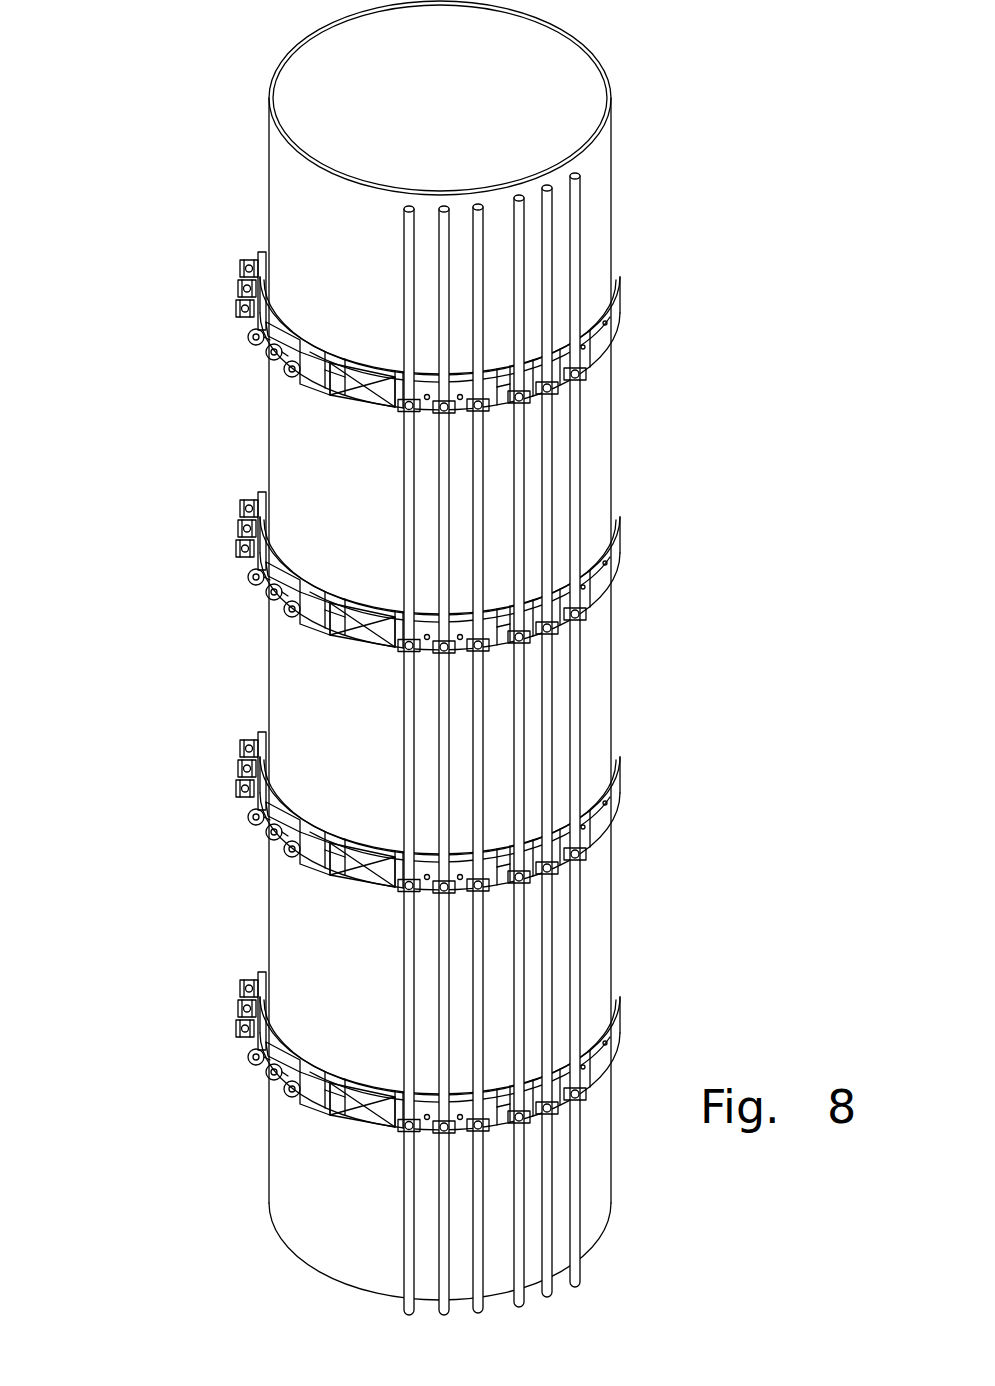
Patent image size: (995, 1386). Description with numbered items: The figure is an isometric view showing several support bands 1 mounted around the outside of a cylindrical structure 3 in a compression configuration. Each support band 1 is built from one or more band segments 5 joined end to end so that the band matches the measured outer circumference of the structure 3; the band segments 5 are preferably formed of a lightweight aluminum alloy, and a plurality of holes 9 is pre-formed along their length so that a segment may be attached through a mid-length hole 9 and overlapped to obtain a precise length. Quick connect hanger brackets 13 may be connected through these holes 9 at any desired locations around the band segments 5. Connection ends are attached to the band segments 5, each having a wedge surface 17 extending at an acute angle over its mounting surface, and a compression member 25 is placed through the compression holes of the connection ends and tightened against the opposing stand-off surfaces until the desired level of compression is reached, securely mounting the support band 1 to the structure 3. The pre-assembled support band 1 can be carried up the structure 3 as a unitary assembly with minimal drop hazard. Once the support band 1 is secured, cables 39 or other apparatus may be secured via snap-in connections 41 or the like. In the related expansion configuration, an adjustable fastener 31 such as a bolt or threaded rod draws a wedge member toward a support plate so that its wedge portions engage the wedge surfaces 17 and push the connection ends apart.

The structure 3 is at (593, 162).
The band segment 5 is at (610, 332).
The support band 1 is at (610, 572).
The hole 9 is at (605, 812).
The cable 39 is at (580, 960).
The snap-in connection 41 is at (240, 310).
The adjustable fastener 31 is at (243, 552).
The quick connect hanger bracket 13 is at (242, 745).
The compression member 25 is at (268, 837).
The wedge surface 17 is at (335, 1107).